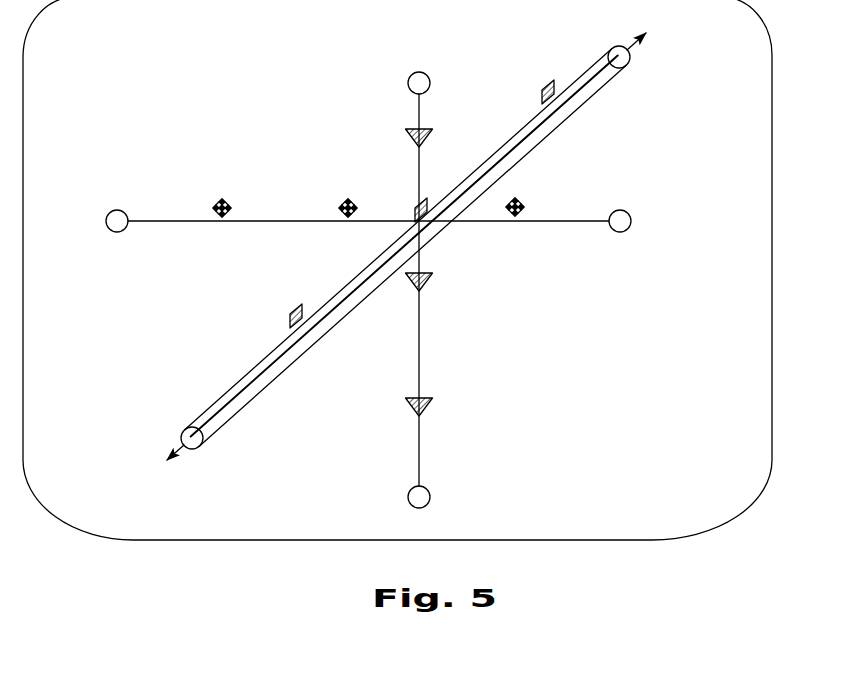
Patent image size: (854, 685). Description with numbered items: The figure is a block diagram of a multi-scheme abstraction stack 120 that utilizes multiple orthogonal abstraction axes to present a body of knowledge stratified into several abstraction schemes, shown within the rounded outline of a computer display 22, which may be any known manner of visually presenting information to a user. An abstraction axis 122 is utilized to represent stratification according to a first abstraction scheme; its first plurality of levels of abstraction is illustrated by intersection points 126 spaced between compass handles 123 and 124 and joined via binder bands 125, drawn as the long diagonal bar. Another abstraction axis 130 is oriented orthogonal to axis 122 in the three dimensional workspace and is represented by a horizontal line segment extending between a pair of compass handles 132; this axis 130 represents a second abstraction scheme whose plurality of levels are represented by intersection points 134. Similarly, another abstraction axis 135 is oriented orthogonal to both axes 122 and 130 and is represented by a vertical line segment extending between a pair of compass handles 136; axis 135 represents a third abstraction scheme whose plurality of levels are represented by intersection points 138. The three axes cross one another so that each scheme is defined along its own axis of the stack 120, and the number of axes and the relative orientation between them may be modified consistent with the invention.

The computer display 22 is at (637, 541).
The multi-scheme abstraction stack 120 is at (326, 131).
The abstraction axis 122 is at (184, 446).
The compass handle 123 is at (612, 49).
The compass handle 124 is at (203, 441).
The binder bands 125 is at (591, 100).
The intersection points 126 is at (541, 84).
The abstraction axis 130 is at (572, 220).
The compass handles 132 is at (108, 229).
The intersection points 134 is at (214, 201).
The abstraction axis 135 is at (421, 446).
The compass handles 136 is at (412, 72).
The intersection points 138 is at (428, 132).